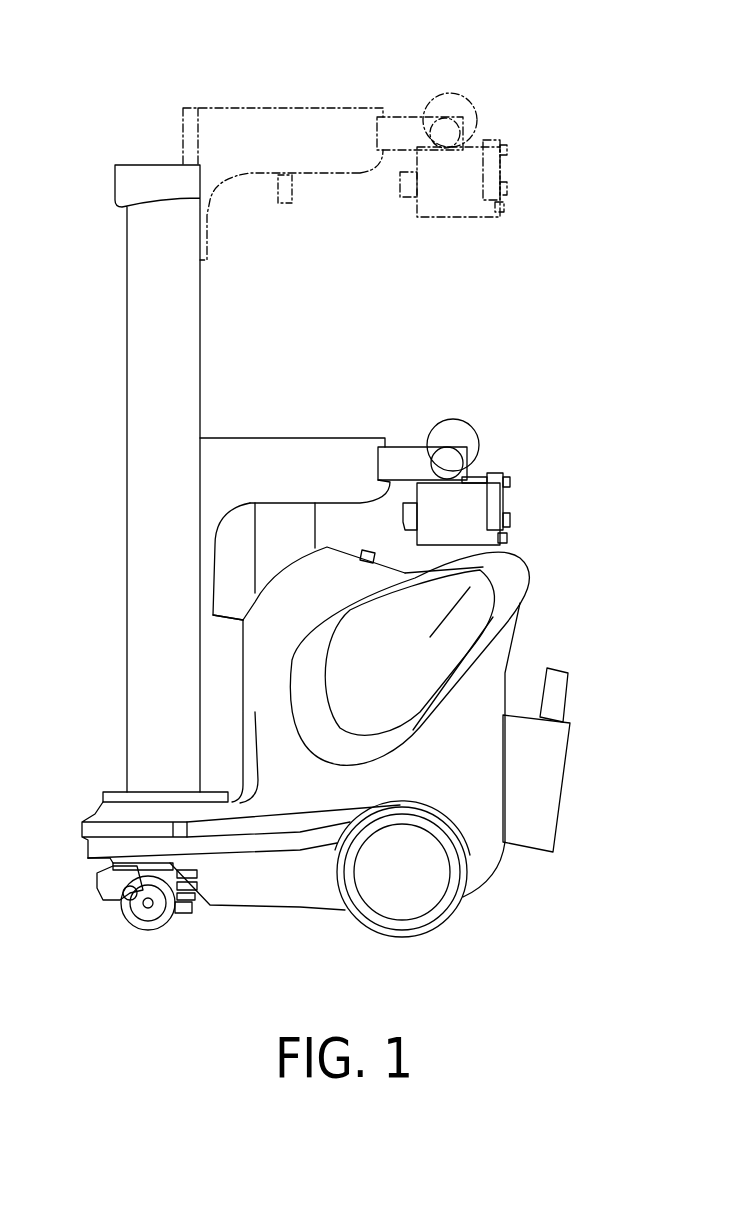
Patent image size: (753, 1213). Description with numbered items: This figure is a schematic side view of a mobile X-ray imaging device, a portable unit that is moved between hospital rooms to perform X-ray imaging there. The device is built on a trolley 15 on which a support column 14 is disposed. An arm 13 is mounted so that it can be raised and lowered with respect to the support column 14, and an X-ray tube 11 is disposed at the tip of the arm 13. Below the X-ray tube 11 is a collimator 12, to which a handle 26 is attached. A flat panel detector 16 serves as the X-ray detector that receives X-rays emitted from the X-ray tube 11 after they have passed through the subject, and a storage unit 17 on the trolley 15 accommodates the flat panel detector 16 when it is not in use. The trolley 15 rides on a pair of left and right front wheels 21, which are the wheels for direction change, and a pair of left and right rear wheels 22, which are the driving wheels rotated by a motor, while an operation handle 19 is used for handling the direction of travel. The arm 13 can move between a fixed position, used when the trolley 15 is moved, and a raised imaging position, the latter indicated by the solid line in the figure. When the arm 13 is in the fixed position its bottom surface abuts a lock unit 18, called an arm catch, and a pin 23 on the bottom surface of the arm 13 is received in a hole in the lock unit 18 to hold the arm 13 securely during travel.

The X-ray tube 11 is at (440, 100).
The collimator 12 is at (420, 200).
The arm 13 is at (221, 150).
The support column 14 is at (147, 457).
The trolley 15 is at (483, 667).
The flat panel detector 16 is at (553, 683).
The storage unit 17 is at (542, 772).
The lock unit 18 is at (283, 533).
The operation handle 19 is at (523, 573).
The front wheels 21 is at (142, 927).
The rear wheels 22 is at (415, 893).
The pin 23 is at (280, 207).
The handle 26 is at (495, 500).